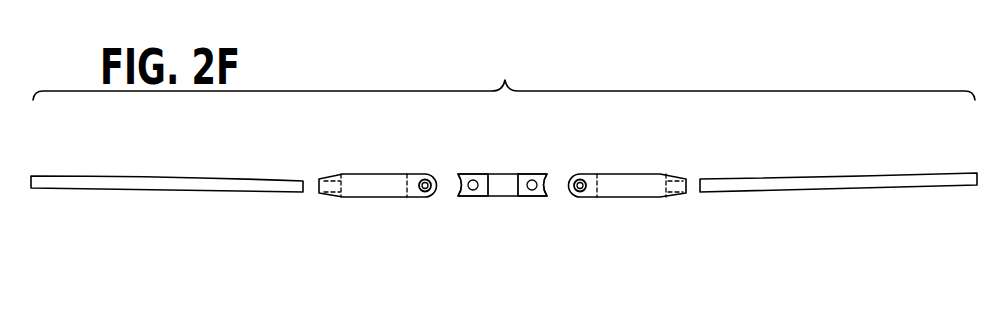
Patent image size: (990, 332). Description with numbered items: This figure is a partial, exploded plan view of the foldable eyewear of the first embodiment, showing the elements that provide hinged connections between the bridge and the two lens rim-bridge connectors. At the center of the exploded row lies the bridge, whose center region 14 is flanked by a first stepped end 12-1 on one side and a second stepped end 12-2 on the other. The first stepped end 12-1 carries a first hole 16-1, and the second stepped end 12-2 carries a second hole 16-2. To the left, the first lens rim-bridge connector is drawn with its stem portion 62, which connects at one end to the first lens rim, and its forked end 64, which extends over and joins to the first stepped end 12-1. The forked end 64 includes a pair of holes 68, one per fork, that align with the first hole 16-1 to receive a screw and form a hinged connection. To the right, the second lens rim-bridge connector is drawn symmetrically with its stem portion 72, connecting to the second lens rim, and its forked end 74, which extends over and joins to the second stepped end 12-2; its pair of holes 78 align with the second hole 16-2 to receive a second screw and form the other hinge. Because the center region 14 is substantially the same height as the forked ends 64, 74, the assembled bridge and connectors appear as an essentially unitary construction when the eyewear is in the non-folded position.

The stem portion 62 is at (222, 199).
The forked end 64 is at (343, 204).
The pair of holes 68 is at (432, 175).
The first stepped end 12-1 is at (475, 172).
The second stepped end 12-2 is at (529, 172).
The center region 14 is at (505, 191).
The first hole 16-1 is at (473, 191).
The second hole 16-2 is at (532, 191).
The forked end 74 is at (628, 222).
The pair of holes 78 is at (582, 176).
The stem portion 72 is at (751, 199).